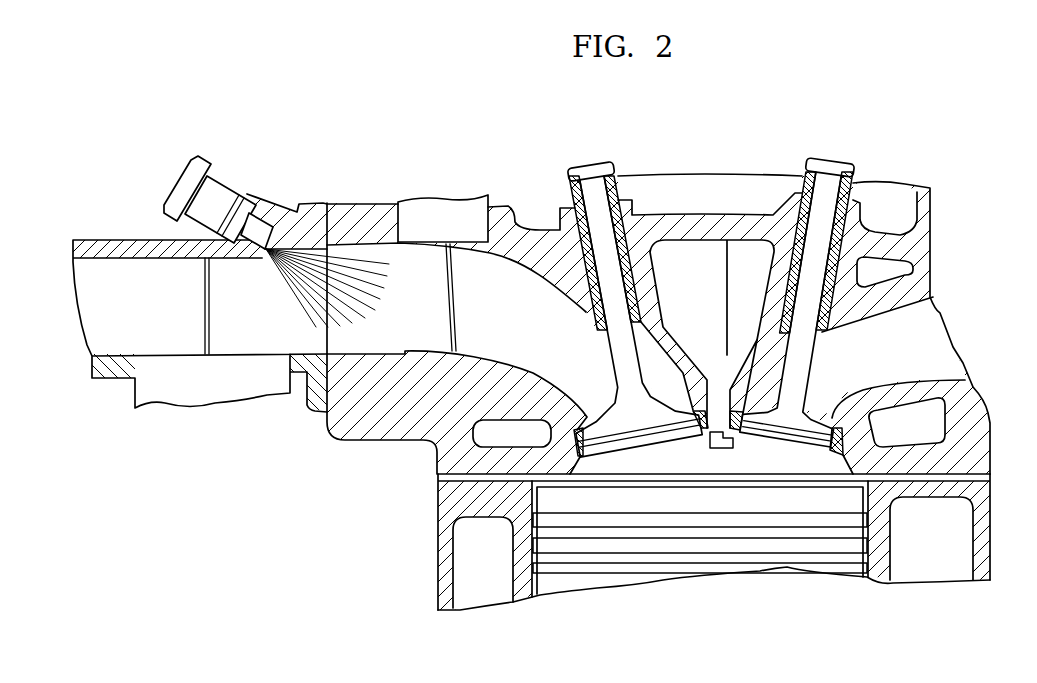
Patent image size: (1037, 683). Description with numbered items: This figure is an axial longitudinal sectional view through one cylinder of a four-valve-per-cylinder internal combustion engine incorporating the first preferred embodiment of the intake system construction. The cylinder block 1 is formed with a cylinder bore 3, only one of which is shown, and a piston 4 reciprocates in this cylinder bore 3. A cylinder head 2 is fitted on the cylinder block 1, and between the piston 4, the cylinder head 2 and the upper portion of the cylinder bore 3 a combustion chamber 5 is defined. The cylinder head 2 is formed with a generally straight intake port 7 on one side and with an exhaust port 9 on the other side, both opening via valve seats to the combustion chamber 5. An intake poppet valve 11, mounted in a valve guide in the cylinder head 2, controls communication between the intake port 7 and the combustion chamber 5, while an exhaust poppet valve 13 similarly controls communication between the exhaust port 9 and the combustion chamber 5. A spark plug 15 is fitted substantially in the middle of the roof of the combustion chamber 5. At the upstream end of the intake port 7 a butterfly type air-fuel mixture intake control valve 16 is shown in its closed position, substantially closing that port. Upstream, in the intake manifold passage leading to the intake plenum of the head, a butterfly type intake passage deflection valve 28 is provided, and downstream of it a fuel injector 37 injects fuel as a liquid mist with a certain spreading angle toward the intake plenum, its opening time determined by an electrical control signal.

The cylinder block 1 is at (980, 538).
The cylinder head 2 is at (970, 424).
The cylinder bore 3 is at (863, 546).
The piston 4 is at (761, 547).
The combustion chamber 5 is at (680, 462).
The intake port 7 is at (500, 280).
The exhaust port 9 is at (933, 338).
The intake poppet valve 11 is at (622, 361).
The exhaust poppet valve 13 is at (795, 373).
The spark plug 15 is at (720, 449).
The air-fuel mixture intake control valve 16 is at (450, 283).
The intake passage deflection valve 28 is at (212, 304).
The fuel injector 37 is at (213, 203).